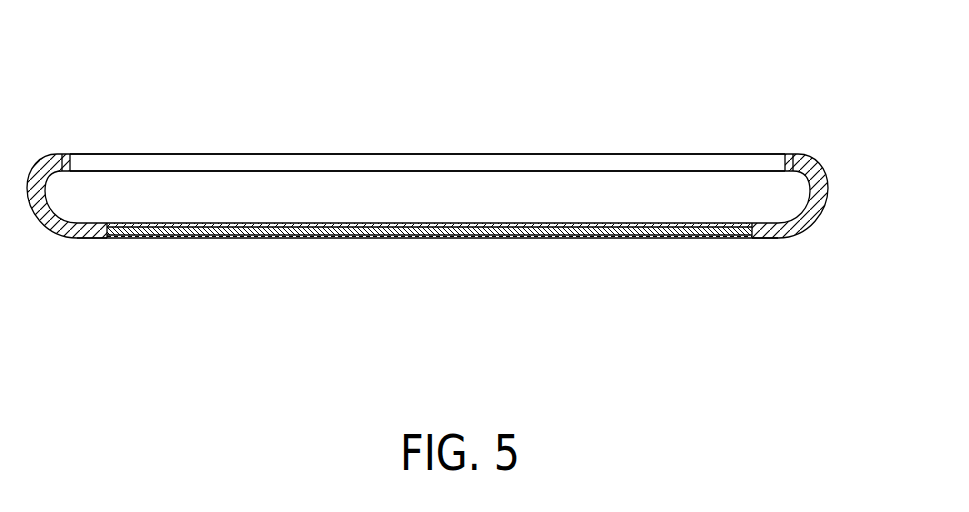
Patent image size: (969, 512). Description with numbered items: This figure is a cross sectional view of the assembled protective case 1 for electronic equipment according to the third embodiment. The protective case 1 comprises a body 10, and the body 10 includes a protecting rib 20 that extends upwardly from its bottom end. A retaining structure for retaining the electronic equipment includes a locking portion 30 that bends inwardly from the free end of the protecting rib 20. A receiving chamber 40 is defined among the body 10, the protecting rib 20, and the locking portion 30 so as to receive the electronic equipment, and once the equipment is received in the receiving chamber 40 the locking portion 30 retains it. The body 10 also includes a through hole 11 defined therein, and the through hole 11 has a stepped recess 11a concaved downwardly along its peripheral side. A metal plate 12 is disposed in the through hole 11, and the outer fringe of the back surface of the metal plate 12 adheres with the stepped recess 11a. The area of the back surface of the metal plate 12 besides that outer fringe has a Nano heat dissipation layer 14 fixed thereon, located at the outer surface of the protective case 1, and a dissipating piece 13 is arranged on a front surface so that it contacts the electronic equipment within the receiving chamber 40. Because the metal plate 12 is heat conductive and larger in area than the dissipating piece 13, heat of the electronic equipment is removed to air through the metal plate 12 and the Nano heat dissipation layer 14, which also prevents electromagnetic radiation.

The protective case 1 is at (33, 29).
The body 10 is at (757, 233).
The through hole 11 is at (107, 228).
The stepped recess 11a is at (107, 233).
The metal plate 12 is at (456, 238).
The dissipating piece 13 is at (337, 225).
The Nano heat dissipation layer 14 is at (572, 240).
The protecting rib 20 is at (812, 208).
The locking portion 30 is at (60, 154).
The receiving chamber 40 is at (271, 200).